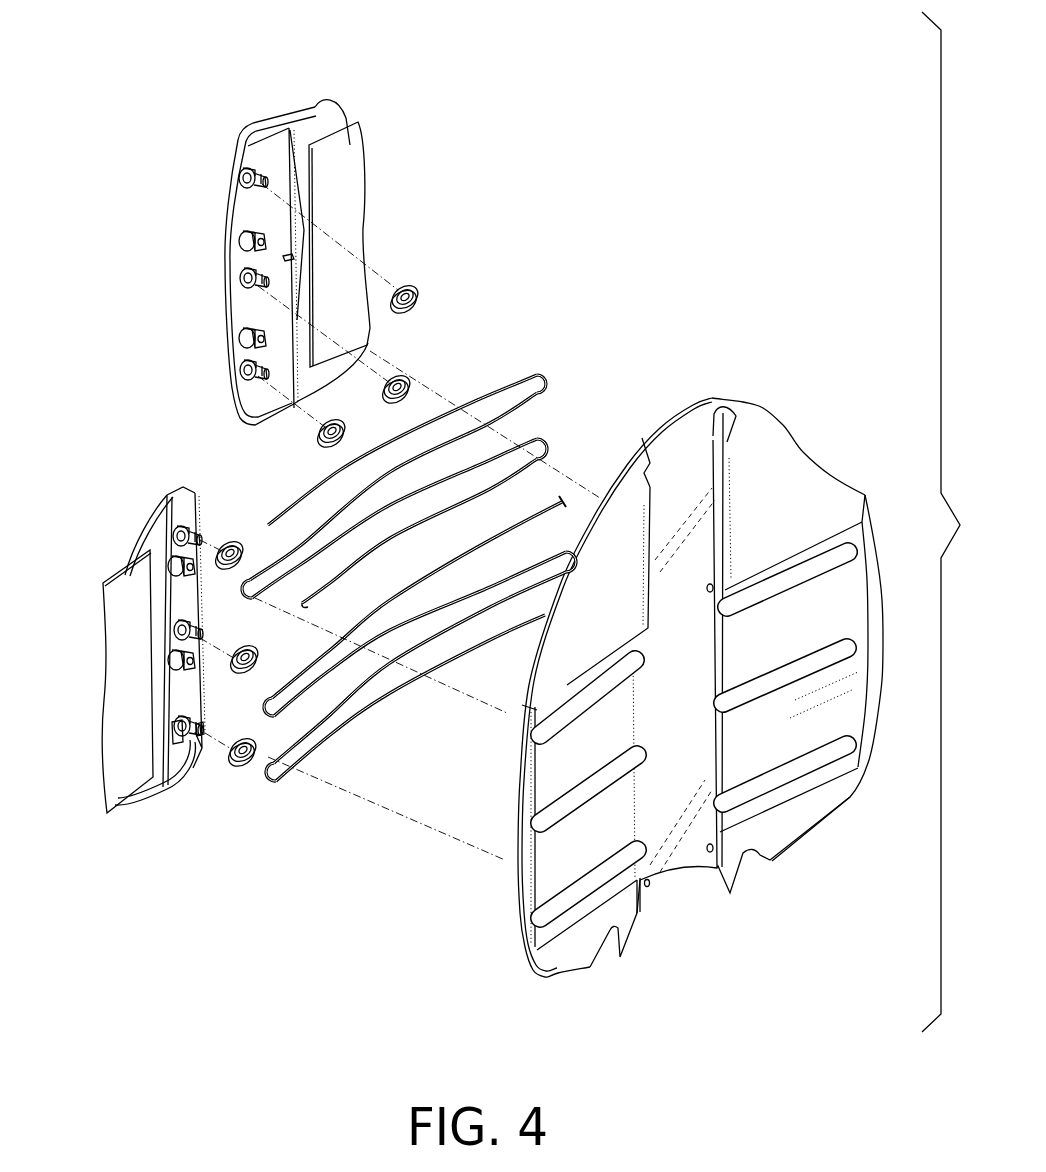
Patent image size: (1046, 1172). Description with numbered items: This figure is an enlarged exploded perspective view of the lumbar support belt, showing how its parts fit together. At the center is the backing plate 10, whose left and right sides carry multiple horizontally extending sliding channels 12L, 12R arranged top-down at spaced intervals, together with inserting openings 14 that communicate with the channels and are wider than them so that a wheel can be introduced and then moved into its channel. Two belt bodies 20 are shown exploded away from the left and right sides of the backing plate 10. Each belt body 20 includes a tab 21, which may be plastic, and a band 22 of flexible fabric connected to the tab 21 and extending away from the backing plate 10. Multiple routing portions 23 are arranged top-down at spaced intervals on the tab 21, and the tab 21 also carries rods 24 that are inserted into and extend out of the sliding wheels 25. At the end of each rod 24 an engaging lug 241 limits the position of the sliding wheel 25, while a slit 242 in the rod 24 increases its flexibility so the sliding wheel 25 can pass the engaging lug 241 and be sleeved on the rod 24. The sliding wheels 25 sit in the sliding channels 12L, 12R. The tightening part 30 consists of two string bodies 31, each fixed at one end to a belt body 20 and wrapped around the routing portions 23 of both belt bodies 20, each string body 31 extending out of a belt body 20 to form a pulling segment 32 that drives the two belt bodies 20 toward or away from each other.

The backing plate 10 is at (766, 383).
The sliding channel 12L is at (791, 578).
The sliding channel 12R is at (570, 692).
The inserting opening 14 is at (730, 612).
The belt body 20 is at (386, 86).
The tab 21 is at (320, 120).
The band 22 is at (352, 182).
The routing portion 23 is at (257, 238).
The rod 24 is at (250, 298).
The engaging lug 241 is at (192, 733).
The slit 242 is at (202, 728).
The sliding wheel 25 is at (432, 281).
The tightening part 30 is at (560, 362).
The string body 31 is at (503, 388).
The pulling segment 32 is at (304, 600).